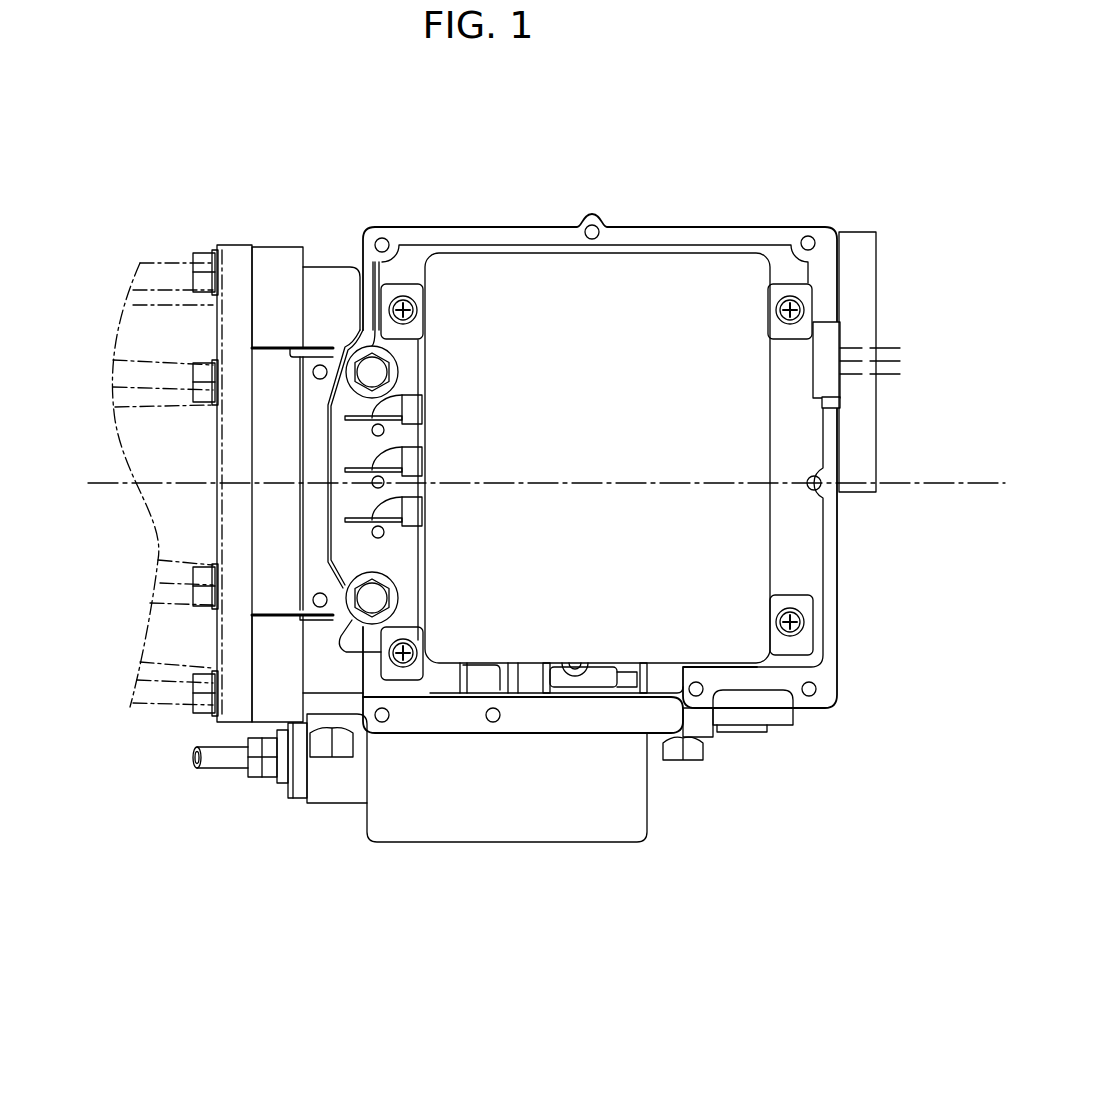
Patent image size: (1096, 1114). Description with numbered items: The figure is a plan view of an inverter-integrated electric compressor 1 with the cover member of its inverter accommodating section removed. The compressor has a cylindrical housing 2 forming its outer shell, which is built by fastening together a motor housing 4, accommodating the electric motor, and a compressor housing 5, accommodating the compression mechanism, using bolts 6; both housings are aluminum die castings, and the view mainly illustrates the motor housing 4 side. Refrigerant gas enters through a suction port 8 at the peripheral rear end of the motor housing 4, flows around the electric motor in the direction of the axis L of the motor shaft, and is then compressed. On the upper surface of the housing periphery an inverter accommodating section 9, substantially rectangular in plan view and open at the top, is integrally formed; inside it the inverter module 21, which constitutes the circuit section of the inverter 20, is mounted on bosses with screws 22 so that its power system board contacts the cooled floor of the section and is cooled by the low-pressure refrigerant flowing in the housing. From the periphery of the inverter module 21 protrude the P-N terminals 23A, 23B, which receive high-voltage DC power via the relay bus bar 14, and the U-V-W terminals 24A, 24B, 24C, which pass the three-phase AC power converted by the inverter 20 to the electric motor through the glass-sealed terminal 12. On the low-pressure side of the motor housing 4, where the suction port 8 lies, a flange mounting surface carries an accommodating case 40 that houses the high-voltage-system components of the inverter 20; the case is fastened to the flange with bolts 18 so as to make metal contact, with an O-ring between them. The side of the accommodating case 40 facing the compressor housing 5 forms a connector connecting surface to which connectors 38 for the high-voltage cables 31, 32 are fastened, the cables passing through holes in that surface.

The inverter-integrated electric compressor 1 is at (601, 406).
The cylindrical housing 2 is at (229, 232).
The motor housing 4 is at (333, 272).
The compressor housing 5 is at (148, 328).
The bolts 6 is at (200, 597).
The suction port 8 is at (775, 715).
The inverter accommodating section 9 is at (737, 227).
The glass-sealed terminal 12 is at (403, 553).
The relay bus bar 14 is at (530, 677).
The bolts 18 is at (690, 752).
The inverter 20 is at (597, 413).
The inverter module 21 is at (591, 367).
The screws 22 is at (420, 312).
The P-N terminal 23A is at (572, 658).
The P-N terminal 23B is at (646, 668).
The U-V-W terminal 24A is at (372, 412).
The U-V-W terminal 24B is at (372, 466).
The U-V-W terminal 24C is at (372, 520).
The high-voltage cable 31 is at (222, 762).
The high-voltage cable 32 is at (222, 762).
The connector 38 is at (298, 790).
The accommodating case 40 is at (527, 822).
The axis L is at (641, 470).